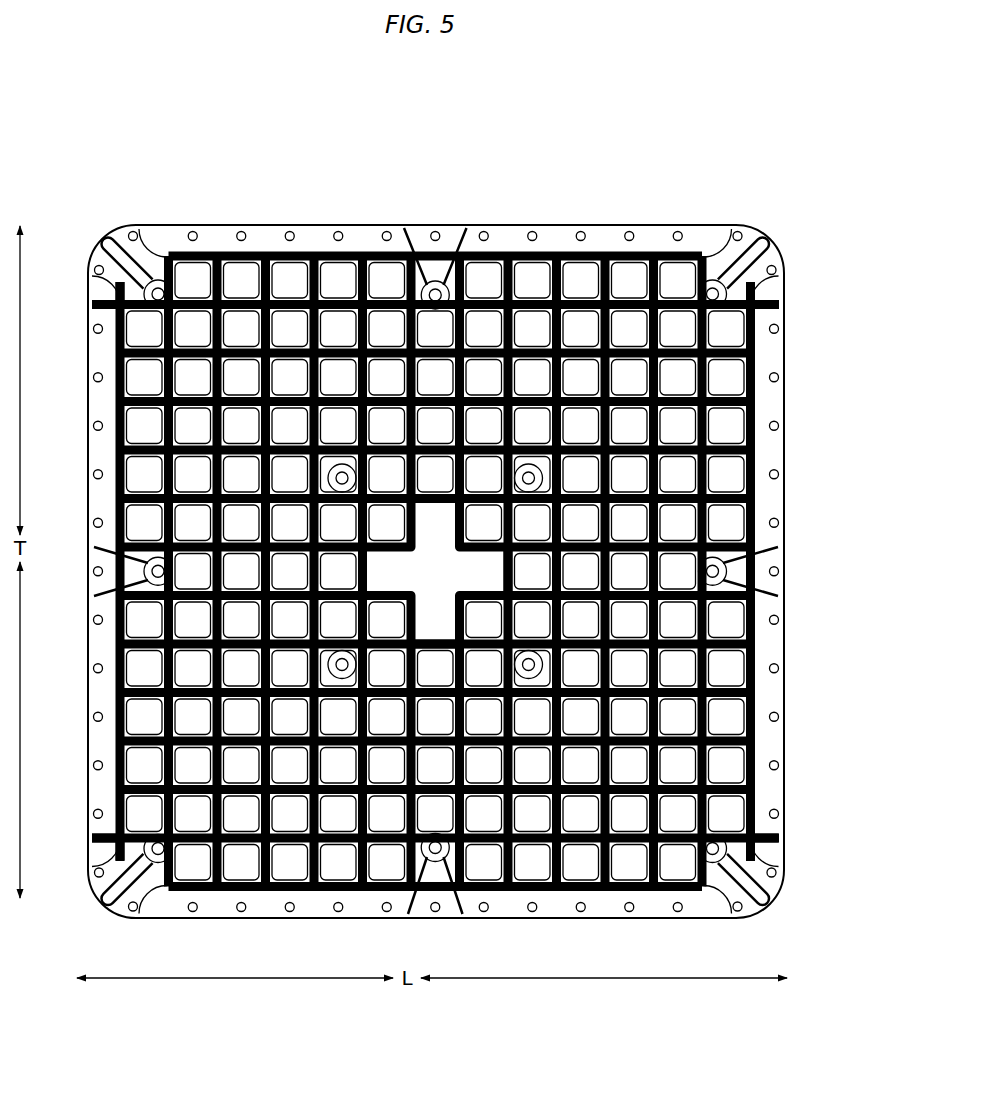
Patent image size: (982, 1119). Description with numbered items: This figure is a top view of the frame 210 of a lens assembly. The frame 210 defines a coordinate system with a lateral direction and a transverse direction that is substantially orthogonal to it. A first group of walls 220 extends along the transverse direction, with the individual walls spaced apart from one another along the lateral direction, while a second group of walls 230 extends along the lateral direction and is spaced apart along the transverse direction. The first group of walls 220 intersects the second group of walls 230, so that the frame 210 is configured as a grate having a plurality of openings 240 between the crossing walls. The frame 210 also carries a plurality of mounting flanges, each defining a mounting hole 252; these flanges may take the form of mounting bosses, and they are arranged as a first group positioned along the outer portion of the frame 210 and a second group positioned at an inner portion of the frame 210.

The frame 210 is at (812, 141).
The first group of walls 220 is at (218, 250).
The second group of walls 230 is at (117, 353).
The openings 240 is at (691, 434).
The mounting hole 252 is at (530, 679).